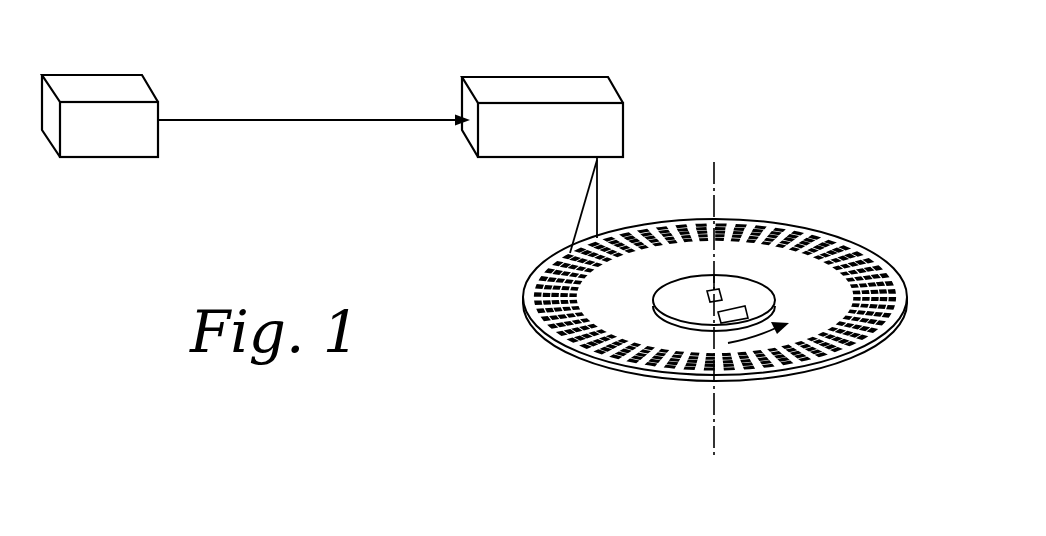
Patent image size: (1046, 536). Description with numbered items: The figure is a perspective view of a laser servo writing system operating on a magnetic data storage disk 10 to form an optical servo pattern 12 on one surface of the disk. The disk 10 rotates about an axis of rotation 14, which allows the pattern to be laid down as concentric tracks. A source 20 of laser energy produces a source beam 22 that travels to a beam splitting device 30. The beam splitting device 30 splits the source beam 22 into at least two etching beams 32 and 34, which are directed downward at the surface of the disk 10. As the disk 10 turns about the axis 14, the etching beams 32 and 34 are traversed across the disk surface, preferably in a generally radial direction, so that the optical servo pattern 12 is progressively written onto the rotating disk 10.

The magnetic data storage disk 10 is at (740, 391).
The optical servo pattern 12 is at (806, 220).
The axis of rotation 14 is at (714, 187).
The source of laser energy 20 is at (113, 88).
The source beam 22 is at (322, 118).
The beam splitting device 30 is at (547, 92).
The etching beam 32 is at (578, 226).
The etching beam 34 is at (598, 197).